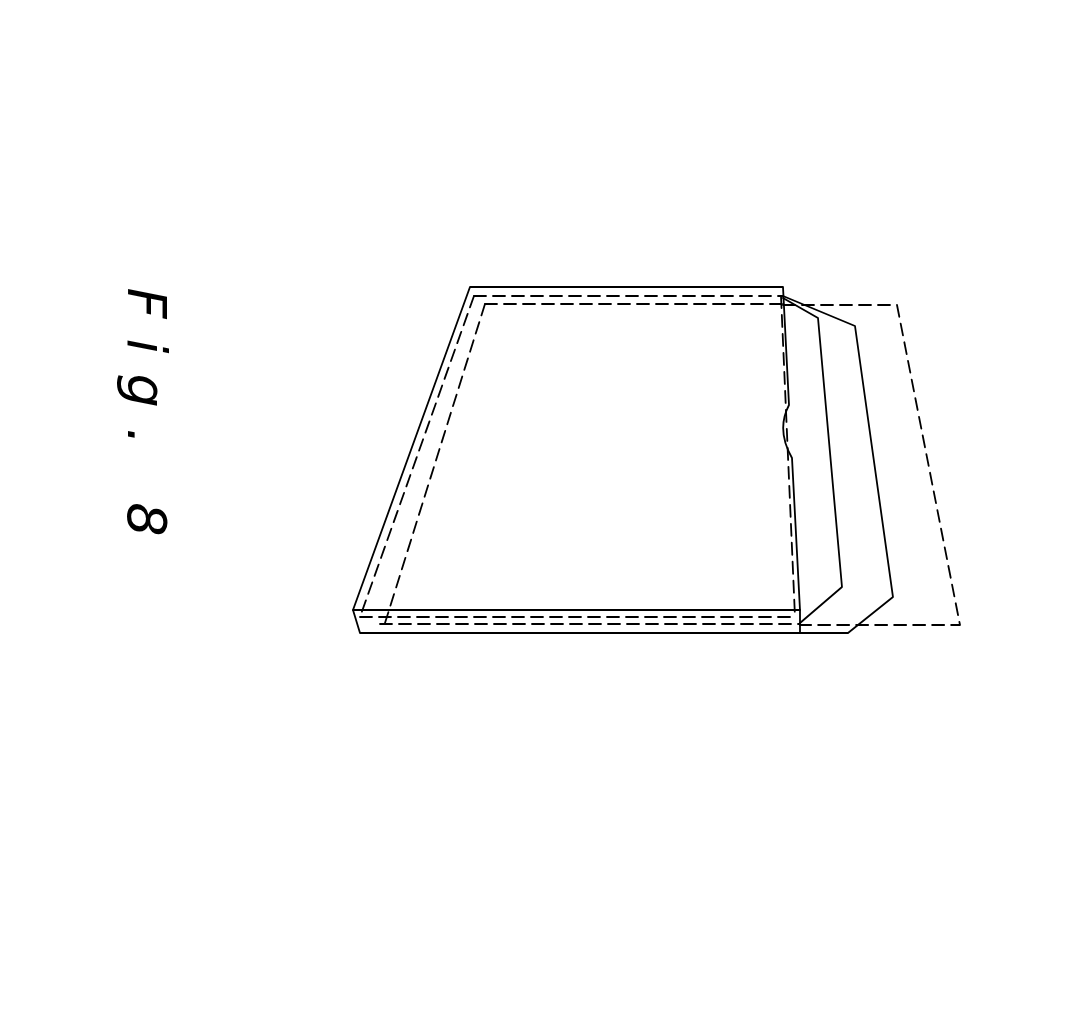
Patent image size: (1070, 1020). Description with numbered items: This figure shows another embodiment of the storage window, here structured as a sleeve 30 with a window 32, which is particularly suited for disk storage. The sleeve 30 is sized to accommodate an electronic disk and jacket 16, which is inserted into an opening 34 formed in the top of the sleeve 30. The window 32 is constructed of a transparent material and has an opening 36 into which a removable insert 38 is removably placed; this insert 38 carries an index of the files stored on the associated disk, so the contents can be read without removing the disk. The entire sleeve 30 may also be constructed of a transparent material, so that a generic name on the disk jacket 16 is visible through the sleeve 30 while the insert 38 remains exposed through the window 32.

The electronic disk and jacket 16 is at (895, 327).
The sleeve 30 is at (785, 640).
The window 32 is at (503, 567).
The opening 34 is at (843, 606).
The opening 36 is at (804, 345).
The removable insert 38 is at (670, 352).